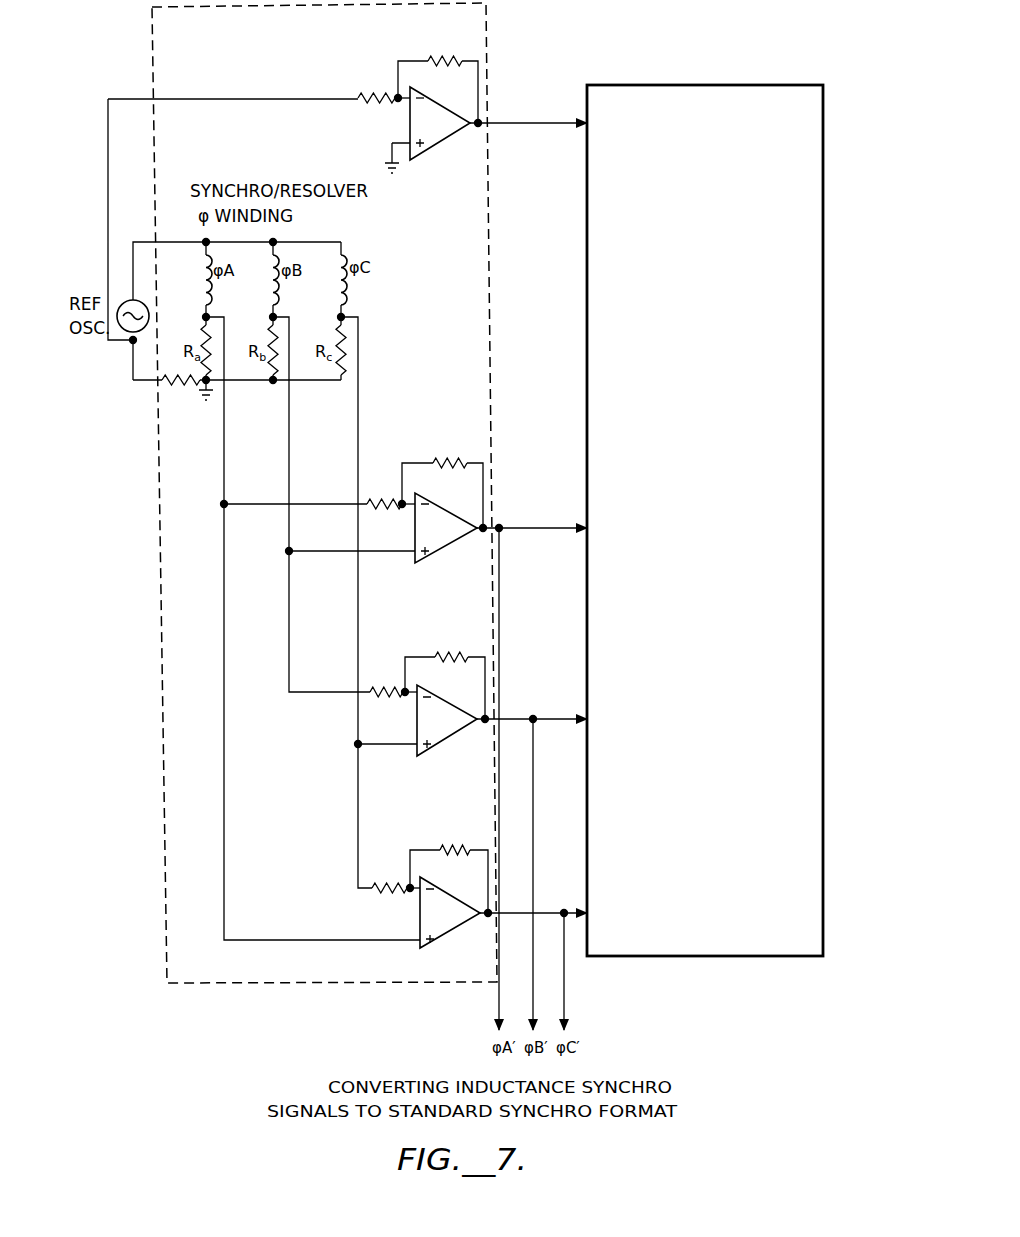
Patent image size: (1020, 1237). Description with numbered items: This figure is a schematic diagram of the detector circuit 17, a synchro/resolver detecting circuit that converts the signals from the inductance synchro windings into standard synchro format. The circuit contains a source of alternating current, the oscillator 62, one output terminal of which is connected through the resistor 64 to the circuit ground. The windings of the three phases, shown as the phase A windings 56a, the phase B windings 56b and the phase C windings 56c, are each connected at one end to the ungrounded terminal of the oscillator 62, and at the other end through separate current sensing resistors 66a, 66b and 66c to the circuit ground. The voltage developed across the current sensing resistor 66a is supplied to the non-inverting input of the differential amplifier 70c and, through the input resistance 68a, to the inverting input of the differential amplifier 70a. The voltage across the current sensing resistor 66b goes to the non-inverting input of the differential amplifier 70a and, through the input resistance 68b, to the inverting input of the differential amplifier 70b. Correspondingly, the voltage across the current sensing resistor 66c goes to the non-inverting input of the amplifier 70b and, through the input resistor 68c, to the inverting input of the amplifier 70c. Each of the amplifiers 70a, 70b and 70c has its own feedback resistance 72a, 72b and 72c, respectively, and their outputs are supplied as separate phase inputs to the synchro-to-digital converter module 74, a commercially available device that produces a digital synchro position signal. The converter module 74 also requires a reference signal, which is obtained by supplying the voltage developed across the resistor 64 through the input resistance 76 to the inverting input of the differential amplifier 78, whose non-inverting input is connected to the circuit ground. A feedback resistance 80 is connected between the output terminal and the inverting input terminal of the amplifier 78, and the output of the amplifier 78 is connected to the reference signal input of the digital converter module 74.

The detector circuit 17 is at (486, 26).
The synchro-to-digital converter module 74 is at (770, 85).
The input resistance 76 is at (379, 92).
The differential amplifier 78 is at (433, 100).
The feedback resistance 80 is at (438, 60).
The oscillator 62 is at (139, 301).
The resistor 64 is at (167, 386).
The windings of phase A 56a is at (203, 297).
The windings of phase B 56b is at (270, 297).
The windings of phase C 56c is at (338, 297).
The current sensing resistor 66a is at (203, 331).
The current sensing resistor 66b is at (270, 331).
The current sensing resistor 66c is at (338, 331).
The input resistance 68a is at (370, 497).
The input resistance 68b is at (371, 686).
The input resistor 68c is at (374, 883).
The differential amplifier 70a is at (446, 546).
The differential amplifier 70b is at (447, 738).
The differential amplifier 70c is at (450, 932).
The feedback resistance 72a is at (438, 462).
The feedback resistance 72b is at (440, 656).
The feedback resistance 72c is at (443, 849).